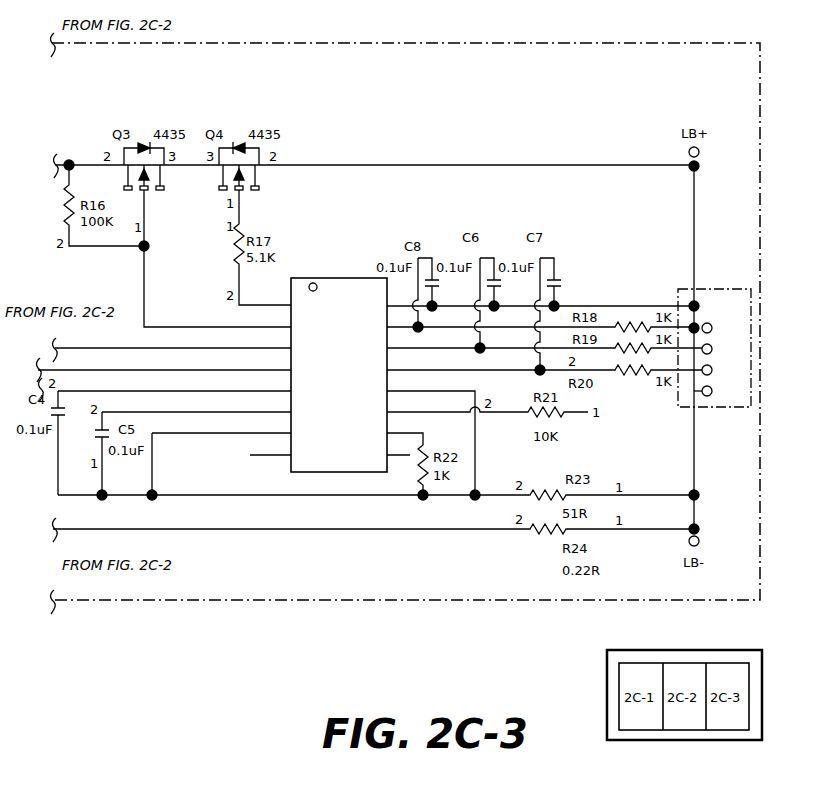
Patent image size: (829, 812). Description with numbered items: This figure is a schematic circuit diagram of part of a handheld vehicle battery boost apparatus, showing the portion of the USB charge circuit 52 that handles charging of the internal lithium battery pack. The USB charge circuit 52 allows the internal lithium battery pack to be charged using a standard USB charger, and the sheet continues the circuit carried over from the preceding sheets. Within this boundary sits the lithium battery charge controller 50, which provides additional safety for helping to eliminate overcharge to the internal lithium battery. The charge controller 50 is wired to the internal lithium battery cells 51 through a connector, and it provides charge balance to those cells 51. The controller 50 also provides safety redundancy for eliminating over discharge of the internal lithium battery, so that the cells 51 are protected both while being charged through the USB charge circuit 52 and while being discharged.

The lithium battery charge controller 50 is at (340, 278).
The internal lithium battery cells 51 is at (718, 289).
The USB charge circuit 52 is at (667, 44).